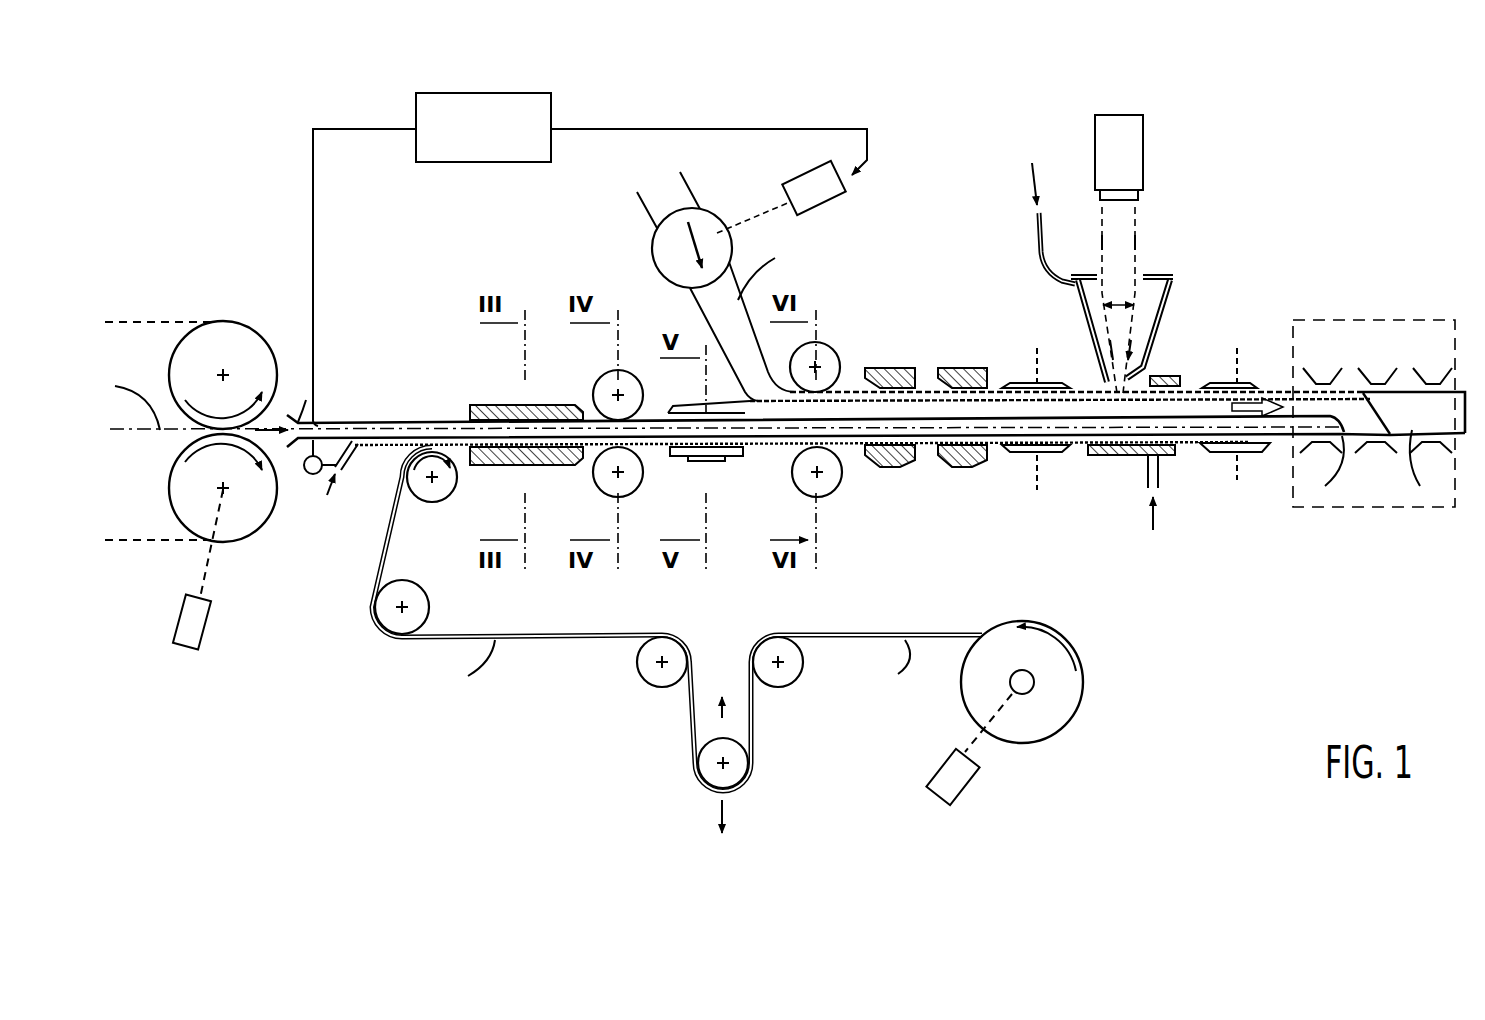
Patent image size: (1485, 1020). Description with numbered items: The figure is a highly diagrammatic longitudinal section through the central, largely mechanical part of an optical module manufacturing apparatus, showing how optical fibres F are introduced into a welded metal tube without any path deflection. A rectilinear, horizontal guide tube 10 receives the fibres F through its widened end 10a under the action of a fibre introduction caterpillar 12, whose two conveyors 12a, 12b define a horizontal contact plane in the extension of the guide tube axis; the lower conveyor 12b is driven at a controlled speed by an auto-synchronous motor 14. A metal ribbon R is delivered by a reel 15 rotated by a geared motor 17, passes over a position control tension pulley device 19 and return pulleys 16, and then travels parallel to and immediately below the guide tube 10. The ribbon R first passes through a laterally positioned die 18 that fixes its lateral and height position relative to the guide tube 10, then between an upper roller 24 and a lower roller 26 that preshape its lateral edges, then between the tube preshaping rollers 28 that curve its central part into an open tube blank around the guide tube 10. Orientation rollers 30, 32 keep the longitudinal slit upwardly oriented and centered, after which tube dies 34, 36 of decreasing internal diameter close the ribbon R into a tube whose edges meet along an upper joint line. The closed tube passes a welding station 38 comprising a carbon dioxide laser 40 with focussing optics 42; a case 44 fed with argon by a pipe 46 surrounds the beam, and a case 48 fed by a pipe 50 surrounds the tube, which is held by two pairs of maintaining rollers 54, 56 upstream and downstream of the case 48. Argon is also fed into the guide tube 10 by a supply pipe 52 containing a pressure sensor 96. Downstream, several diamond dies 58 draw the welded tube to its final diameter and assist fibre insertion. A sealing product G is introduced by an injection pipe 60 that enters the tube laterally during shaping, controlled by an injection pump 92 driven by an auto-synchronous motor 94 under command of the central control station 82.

The guide tube 10 is at (332, 421).
The widened end 10a is at (306, 400).
The fibre introduction caterpillar 12 is at (135, 322).
The upper conveyor 12a is at (195, 322).
The lower conveyor 12b is at (165, 540).
The auto-synchronous motor 14 is at (200, 640).
The reel 15 is at (1078, 694).
The return pulleys 16 is at (388, 600).
The geared motor 17 is at (965, 780).
The die 18 is at (512, 405).
The position control tension pulley device 19 is at (683, 758).
The upper roller 24 is at (598, 402).
The lower roller 26 is at (606, 484).
The tube preshaping rollers 28 is at (727, 457).
The upper orientation roller 30 is at (828, 350).
The lower orientation roller 32 is at (832, 488).
The tube die 34 is at (900, 368).
The tube die 36 is at (970, 368).
The welding station 38 is at (1165, 178).
The CO2 laser 40 is at (1115, 128).
The focussing optics 42 is at (1120, 300).
The case 44 is at (1155, 300).
The pipe 46 is at (1045, 256).
The case 48 is at (1103, 457).
The pipe 50 is at (1160, 475).
The argon supply pipe 52 is at (350, 480).
The maintaining rollers 54 is at (1005, 456).
The maintaining rollers 56 is at (1245, 383).
The diamond dies 58 is at (1425, 385).
The injection pipe 60 is at (1085, 398).
The central control station 82 is at (432, 118).
The injection pump 92 is at (660, 246).
The auto-synchronous motor 94 is at (832, 195).
The pressure sensor 96 is at (310, 476).
The optical fibres F is at (765, 440).
The sealing product G is at (717, 286).
The metal ribbon R is at (677, 619).